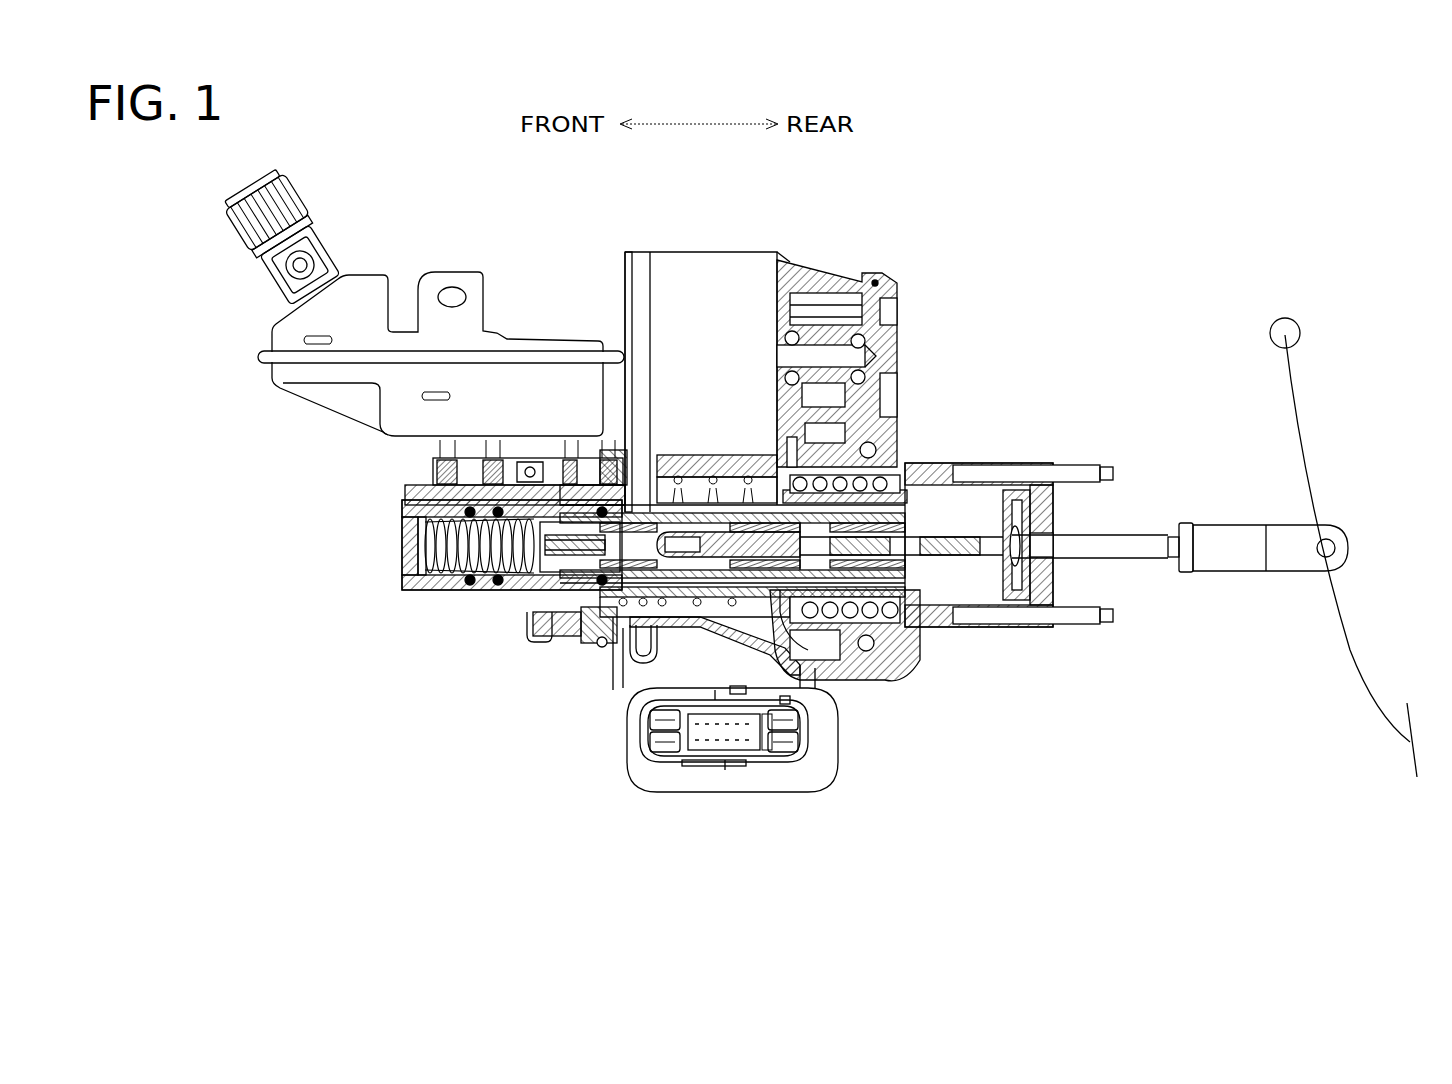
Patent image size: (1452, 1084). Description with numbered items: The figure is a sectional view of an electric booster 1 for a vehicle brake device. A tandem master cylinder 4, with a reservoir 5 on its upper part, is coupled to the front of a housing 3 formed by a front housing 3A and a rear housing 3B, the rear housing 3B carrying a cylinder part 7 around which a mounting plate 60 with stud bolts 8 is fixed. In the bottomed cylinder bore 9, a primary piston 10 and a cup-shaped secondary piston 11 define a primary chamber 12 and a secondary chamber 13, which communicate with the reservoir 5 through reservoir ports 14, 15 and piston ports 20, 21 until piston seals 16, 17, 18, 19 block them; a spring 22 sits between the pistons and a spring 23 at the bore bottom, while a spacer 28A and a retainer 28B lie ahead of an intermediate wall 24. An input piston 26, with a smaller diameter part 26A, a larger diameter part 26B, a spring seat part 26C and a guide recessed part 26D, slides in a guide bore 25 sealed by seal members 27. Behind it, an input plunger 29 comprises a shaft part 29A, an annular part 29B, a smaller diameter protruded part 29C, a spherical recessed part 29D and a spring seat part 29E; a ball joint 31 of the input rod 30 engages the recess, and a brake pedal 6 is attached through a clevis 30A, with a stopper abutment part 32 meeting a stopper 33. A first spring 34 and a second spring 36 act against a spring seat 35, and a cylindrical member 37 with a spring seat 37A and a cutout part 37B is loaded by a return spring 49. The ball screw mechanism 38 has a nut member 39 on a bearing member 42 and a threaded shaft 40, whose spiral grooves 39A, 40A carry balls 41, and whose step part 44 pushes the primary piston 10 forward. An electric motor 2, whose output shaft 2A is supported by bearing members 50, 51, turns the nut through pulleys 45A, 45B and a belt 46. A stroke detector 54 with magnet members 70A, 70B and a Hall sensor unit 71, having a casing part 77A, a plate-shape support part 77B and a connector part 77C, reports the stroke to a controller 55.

The electric booster 1 is at (1060, 288).
The electric motor 2 is at (626, 258).
The output shaft 2A is at (850, 262).
The housing 3 is at (882, 650).
The front housing 3A is at (808, 645).
The rear housing 3B is at (882, 667).
The master cylinder 4 is at (406, 585).
The reservoir 5 is at (375, 292).
The brake pedal 6 is at (1302, 418).
The cylinder part 7 is at (1000, 472).
The stud bolts 8 is at (1090, 618).
The cylinder bore 9 is at (426, 592).
The primary piston 10 is at (662, 640).
The secondary piston 11 is at (522, 594).
The primary chamber 12 is at (530, 600).
The secondary chamber 13 is at (442, 592).
The reservoir port 14 is at (590, 480).
The reservoir port 15 is at (438, 478).
The piston seal 16 is at (742, 610).
The piston seal 17 is at (616, 640).
The piston seal 18 is at (500, 594).
The piston seal 19 is at (462, 594).
The piston port 20 is at (600, 488).
The piston port 21 is at (424, 546).
The spring 22 is at (575, 640).
The spring 23 is at (404, 562).
The intermediate wall 24 is at (674, 258).
The guide bore 25 is at (712, 620).
The input piston 26 is at (655, 258).
The smaller diameter part 26A is at (640, 620).
The larger diameter part 26B is at (762, 600).
The spring seat part 26C is at (903, 362).
The guide recessed part 26D is at (848, 612).
The seal members 27 is at (684, 612).
The spacer 28A is at (628, 398).
The retainer 28B is at (620, 468).
The input plunger 29 is at (915, 475).
The shaft part 29A is at (905, 445).
The annular part 29B is at (960, 602).
The smaller diameter protruded part 29C is at (910, 420).
The spherical recessed part 29D is at (1046, 492).
The spring seat part 29E is at (985, 478).
The input rod 30 is at (1138, 556).
The clevis 30A is at (1240, 530).
The ball joint 31 is at (950, 588).
The stopper abutment part 32 is at (1000, 602).
The stopper 33 is at (1012, 595).
The first spring 34 is at (708, 258).
The spring seat 35 is at (1022, 482).
The second spring 36 is at (980, 602).
The cylindrical member 37 is at (960, 478).
The spring seat 37A is at (742, 258).
The cutout part 37B is at (905, 615).
The ball screw mechanism 38 is at (905, 392).
The nut member 39 is at (900, 622).
The spiral groove 39A is at (900, 335).
The threaded shaft 40 is at (1010, 478).
The spiral groove 40A is at (935, 600).
The balls 41 is at (866, 632).
The bearing member 42 is at (895, 642).
The step part 44 is at (1080, 470).
The pulley 45A is at (866, 262).
The pulley 45B is at (838, 632).
The belt 46 is at (838, 262).
The return spring 49 is at (705, 470).
The bearing member 50 is at (895, 266).
The bearing member 51 is at (794, 258).
The stroke detector 54 is at (752, 740).
The controller 55 is at (700, 780).
The mounting plate 60 is at (920, 612).
The magnet member 70A is at (766, 258).
The magnet member 70B is at (910, 465).
The Hall sensor unit 71 is at (580, 660).
The casing part 77A is at (778, 705).
The plate-shape support part 77B is at (656, 705).
The connector part 77C is at (560, 645).